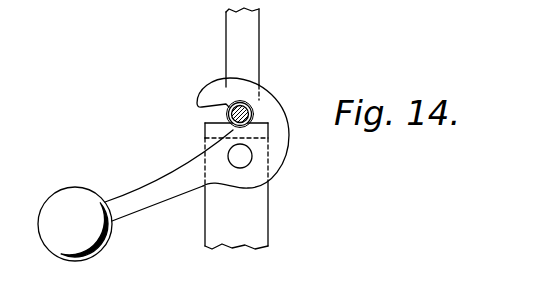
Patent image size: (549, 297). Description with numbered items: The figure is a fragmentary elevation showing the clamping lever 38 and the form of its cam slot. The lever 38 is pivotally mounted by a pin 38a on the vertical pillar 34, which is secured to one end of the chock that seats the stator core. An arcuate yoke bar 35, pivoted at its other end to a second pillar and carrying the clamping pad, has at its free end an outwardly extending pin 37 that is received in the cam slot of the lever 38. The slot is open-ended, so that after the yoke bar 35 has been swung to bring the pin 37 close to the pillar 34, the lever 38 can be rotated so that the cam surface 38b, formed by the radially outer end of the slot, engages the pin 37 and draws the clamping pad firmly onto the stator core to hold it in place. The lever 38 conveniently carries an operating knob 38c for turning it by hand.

The pillar 34 is at (264, 219).
The yoke bar 35 is at (207, 126).
The pin 37 is at (251, 108).
The clamping lever 38 is at (160, 181).
The pin 38a is at (253, 158).
The cam surface 38b is at (206, 106).
The operating knob 38c is at (100, 242).